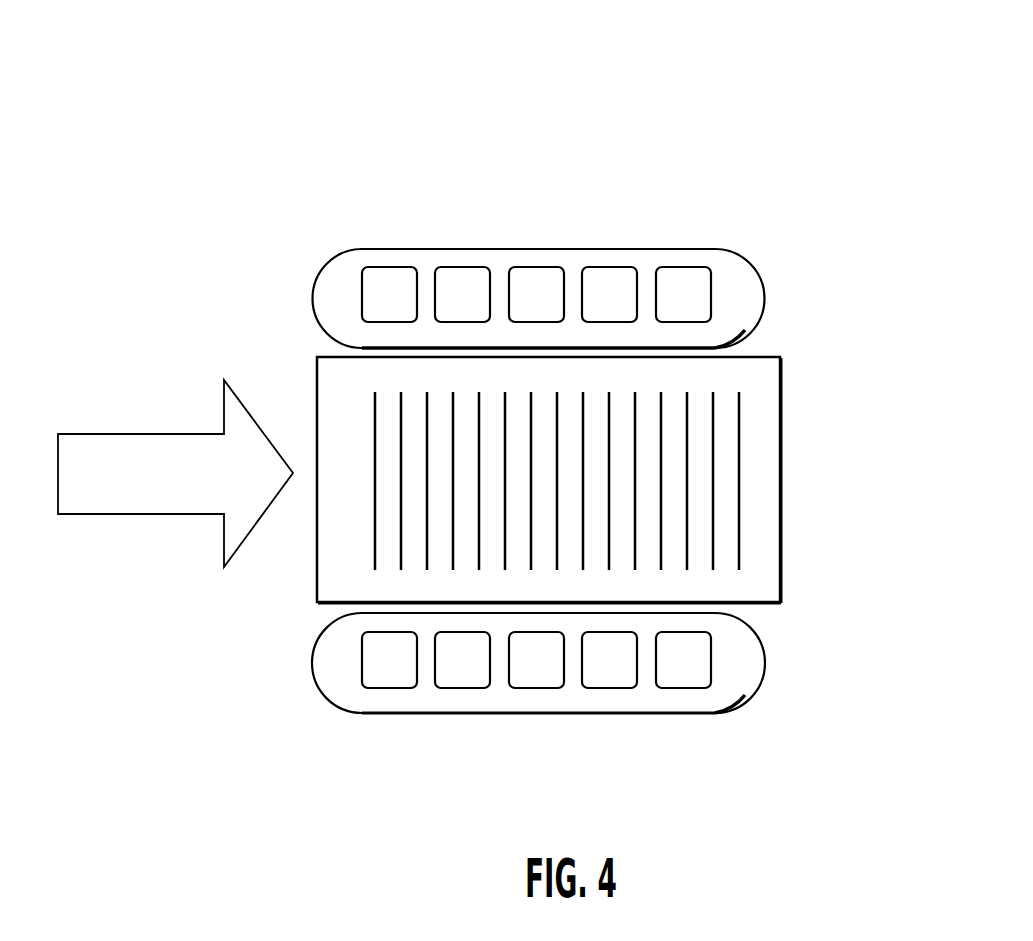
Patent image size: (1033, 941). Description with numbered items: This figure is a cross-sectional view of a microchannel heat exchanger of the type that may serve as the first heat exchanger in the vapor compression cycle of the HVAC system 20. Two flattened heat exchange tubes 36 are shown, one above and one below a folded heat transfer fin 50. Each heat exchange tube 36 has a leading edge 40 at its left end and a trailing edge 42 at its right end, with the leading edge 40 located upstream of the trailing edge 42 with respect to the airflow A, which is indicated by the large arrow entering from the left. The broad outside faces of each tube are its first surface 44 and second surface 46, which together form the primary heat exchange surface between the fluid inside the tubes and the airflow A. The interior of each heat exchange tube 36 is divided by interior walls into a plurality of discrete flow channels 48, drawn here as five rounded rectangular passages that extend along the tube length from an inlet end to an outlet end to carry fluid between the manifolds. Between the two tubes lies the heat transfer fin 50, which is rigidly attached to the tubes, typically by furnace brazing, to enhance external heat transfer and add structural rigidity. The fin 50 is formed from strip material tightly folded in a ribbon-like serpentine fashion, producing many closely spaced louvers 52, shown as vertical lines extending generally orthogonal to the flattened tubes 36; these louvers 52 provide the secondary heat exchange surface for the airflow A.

The heating, ventilation, and air conditioning (HVAC) system 20 is at (160, 165).
The heat exchange tube 36 is at (538, 454).
The leading edge 40 is at (310, 297).
The trailing edge 42 is at (758, 273).
The first surface 44 is at (481, 250).
The second surface 46 is at (408, 713).
The flow channels 48 is at (533, 292).
The heat transfer fin 50 is at (612, 480).
The louvers 52 is at (713, 443).
The airflow A is at (132, 513).